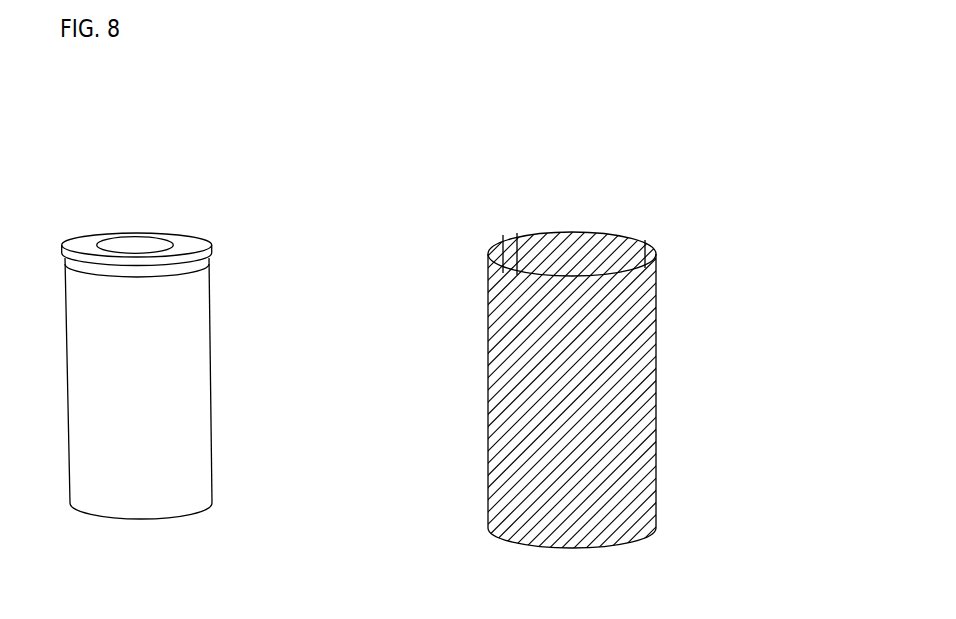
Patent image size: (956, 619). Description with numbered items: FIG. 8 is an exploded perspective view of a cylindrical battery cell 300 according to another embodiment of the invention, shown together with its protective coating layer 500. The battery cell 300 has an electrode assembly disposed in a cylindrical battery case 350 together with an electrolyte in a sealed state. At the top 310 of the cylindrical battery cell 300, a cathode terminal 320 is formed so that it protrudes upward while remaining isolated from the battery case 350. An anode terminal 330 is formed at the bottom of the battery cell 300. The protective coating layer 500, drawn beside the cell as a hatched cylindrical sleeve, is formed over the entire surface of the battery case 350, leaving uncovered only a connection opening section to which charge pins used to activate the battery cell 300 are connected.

The cylindrical battery cell 300 is at (112, 201).
The top 310 is at (168, 257).
The cathode terminal 320 is at (132, 245).
The anode terminal 330 is at (140, 519).
The cylindrical battery case 350 is at (211, 362).
The protective coating layer 500 is at (578, 215).